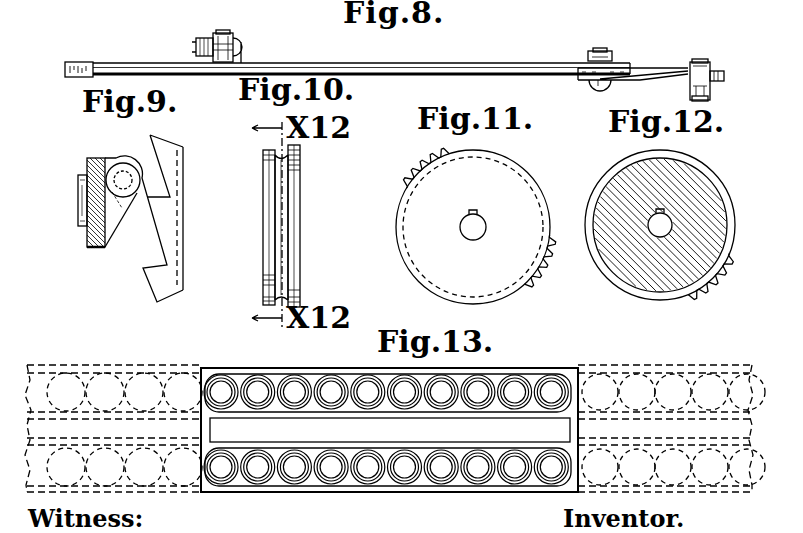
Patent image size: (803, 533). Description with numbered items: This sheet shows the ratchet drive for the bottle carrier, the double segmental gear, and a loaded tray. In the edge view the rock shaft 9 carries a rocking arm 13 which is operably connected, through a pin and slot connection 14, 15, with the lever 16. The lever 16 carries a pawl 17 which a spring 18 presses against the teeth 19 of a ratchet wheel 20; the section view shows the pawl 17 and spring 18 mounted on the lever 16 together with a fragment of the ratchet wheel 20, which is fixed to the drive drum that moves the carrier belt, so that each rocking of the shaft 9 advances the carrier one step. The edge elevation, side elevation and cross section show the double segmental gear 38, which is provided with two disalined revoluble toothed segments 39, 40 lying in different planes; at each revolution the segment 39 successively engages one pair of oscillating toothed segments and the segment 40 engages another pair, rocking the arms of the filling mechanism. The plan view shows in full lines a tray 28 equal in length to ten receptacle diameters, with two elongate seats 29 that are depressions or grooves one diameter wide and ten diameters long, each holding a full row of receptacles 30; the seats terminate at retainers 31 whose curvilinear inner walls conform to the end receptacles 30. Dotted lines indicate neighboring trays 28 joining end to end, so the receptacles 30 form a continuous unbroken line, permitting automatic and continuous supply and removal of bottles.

In FIG. 8, the rock shaft 9 is at (710, 97).
In FIG. 8, the rocking arm 13 is at (647, 67).
In FIG. 8, the pin of pin and slot connection 14 is at (598, 83).
In FIG. 8, the slot of pin and slot connection 15 is at (615, 79).
In FIG. 8, the lever 16 is at (425, 62).
In FIG. 9, the lever 16 is at (103, 161).
In FIG. 8, the pawl 17 is at (232, 33).
In FIG. 9, the pawl 17 is at (124, 204).
In FIG. 8, the spring 18 is at (194, 0).
In FIG. 9, the spring 18 is at (142, 226).
In FIG. 9, the teeth 19 is at (154, 176).
In FIG. 9, the ratchet wheel 20 is at (183, 222).
In FIG. 13, the tray 28 is at (51, 365).
In FIG. 13, the seats 29 is at (125, 375).
In FIG. 13, the receptacles 30 is at (152, 375).
In FIG. 13, the retainers 31 is at (207, 373).
In FIG. 10, the disk 38 is at (300, 200).
In FIG. 11, the disk 38 is at (412, 226).
In FIG. 12, the disk 38 is at (608, 258).
In FIG. 10, the revoluble toothed segment 39 is at (300, 158).
In FIG. 11, the revoluble toothed segment 39 is at (421, 161).
In FIG. 10, the revoluble toothed segment 40 is at (263, 268).
In FIG. 11, the revoluble toothed segment 40 is at (535, 287).
In FIG. 12, the revoluble toothed segment 40 is at (722, 287).